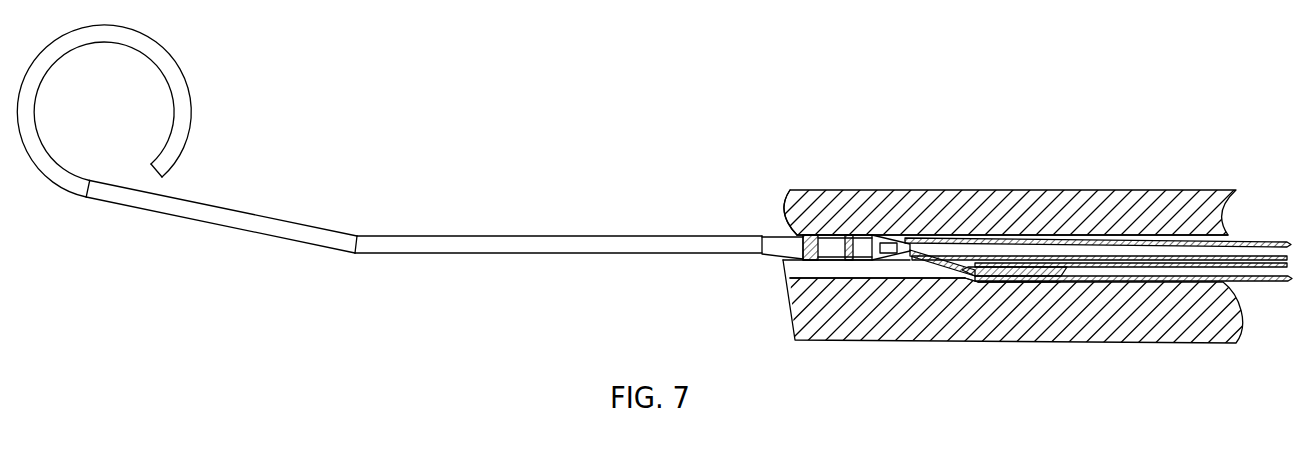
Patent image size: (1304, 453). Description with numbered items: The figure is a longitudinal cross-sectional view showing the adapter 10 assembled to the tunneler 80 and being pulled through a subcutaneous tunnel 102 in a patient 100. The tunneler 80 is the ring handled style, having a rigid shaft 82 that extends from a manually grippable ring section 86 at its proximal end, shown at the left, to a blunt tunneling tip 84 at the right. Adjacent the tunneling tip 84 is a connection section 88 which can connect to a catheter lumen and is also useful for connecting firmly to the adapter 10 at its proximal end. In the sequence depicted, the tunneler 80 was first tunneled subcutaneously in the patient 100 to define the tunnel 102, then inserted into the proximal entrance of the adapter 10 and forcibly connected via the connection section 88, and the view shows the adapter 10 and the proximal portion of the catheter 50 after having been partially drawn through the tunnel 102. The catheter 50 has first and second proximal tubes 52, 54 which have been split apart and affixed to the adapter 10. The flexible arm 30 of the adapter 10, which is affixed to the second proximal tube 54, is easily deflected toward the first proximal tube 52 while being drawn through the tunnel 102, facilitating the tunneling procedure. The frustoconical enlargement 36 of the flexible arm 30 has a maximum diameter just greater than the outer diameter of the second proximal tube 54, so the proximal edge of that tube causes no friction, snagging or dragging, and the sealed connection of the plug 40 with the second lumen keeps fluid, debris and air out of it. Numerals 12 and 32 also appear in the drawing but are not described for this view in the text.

The ring section 86 is at (183, 65).
The tunneler 80 is at (395, 233).
The rigid shaft 82 is at (573, 233).
The tunneling tip 84 is at (903, 263).
The connection section 88 is at (838, 263).
The patient 100 is at (1167, 208).
The housing inlet 12 is at (858, 226).
The adapter 10 is at (935, 231).
The tunnel 102 is at (1215, 239).
The first proximal tube 52 is at (987, 236).
The catheter 50 is at (1087, 236).
The second proximal tube 54 is at (1041, 330).
The plug 40 is at (1052, 283).
The frustoconical enlargement 36 is at (1018, 284).
The housing surface 32 is at (970, 283).
The flexible arm 30 is at (1005, 283).